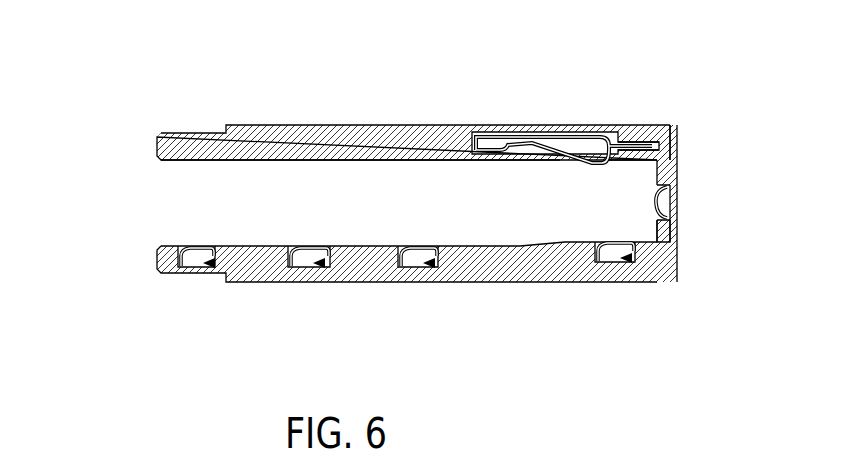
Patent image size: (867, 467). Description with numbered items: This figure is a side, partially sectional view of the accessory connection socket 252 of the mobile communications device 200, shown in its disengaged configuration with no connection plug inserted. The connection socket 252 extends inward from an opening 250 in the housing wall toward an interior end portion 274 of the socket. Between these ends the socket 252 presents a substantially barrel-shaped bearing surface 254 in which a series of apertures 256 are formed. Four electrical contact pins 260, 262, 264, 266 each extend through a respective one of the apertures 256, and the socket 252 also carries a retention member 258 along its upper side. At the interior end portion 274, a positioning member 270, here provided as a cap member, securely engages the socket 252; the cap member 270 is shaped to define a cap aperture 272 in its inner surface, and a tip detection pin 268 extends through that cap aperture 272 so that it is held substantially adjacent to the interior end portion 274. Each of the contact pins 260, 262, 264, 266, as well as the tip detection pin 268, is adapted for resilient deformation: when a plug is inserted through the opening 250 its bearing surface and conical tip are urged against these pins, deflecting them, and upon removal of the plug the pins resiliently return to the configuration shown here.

The housing 200 is at (690, 133).
The opening 250 is at (160, 173).
The accessory connection socket 252 is at (480, 268).
The bearing surface 254 is at (275, 247).
The apertures 256 is at (215, 263).
The retention member 258 is at (562, 145).
The electrical contact pin 260 is at (192, 262).
The electrical contact pin 262 is at (302, 262).
The electrical contact pin 264 is at (412, 262).
The electrical contact pin 266 is at (609, 258).
The tip detection pin 268 is at (662, 214).
The positioning member 270 is at (665, 228).
The cap aperture 272 is at (670, 192).
The interior end portion 274 is at (663, 125).